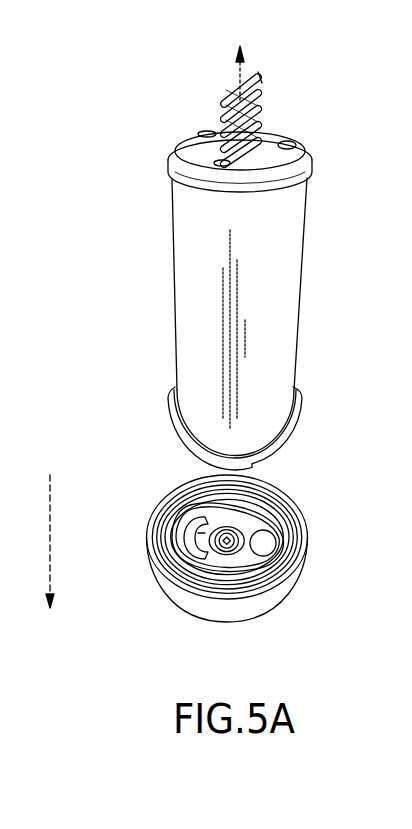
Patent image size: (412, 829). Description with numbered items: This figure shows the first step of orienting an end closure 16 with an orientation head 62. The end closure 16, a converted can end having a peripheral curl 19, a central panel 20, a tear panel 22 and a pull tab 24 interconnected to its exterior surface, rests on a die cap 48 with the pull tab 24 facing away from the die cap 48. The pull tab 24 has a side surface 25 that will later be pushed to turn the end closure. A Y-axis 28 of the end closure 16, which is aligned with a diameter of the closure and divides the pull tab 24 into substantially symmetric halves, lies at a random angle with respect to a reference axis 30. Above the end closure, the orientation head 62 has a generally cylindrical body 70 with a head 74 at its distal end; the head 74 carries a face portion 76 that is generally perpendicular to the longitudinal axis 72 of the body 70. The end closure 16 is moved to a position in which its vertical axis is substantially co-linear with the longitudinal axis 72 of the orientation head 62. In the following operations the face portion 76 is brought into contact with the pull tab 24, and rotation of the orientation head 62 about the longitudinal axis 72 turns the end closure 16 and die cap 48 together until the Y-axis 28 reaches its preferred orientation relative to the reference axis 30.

The end closure 16 is at (334, 545).
The peripheral curl 19 is at (295, 521).
The central panel 20 is at (263, 508).
The tear panel 22 is at (163, 536).
The pull tab 24 is at (268, 562).
The side surface 25 is at (237, 557).
The Y-axis 28 is at (258, 546).
The reference axis 30 is at (50, 557).
The die cap 48 is at (180, 602).
The orientation head 62 is at (99, 244).
The body 70 is at (192, 330).
The longitudinal axis 72 is at (238, 80).
The head 74 is at (172, 423).
The face portion 76 is at (157, 456).